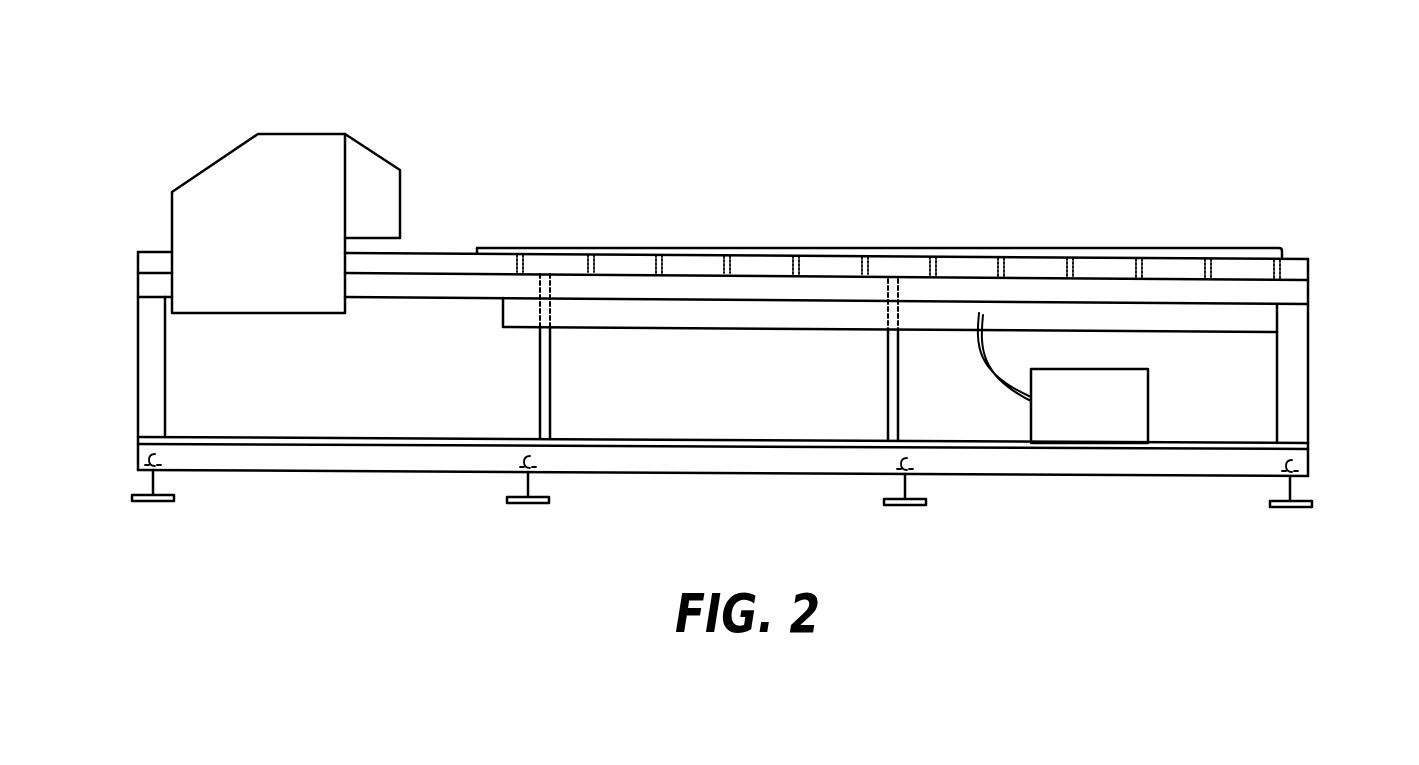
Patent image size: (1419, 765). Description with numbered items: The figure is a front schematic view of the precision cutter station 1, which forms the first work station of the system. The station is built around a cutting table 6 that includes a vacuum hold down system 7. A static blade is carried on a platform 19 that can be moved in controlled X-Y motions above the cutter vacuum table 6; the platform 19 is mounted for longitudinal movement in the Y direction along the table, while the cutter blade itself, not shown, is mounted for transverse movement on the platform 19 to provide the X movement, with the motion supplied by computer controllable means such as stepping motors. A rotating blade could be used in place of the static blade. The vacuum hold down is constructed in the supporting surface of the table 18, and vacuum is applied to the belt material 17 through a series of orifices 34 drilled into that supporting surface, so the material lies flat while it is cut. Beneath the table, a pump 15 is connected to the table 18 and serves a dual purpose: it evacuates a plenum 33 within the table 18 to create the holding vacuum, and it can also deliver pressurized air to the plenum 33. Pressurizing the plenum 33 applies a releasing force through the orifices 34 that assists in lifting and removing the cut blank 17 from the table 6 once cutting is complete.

The precision cutter station 1 is at (832, 112).
The cutting table 6 is at (1324, 356).
The vacuum hold down system 7 is at (1324, 282).
The pump 15 is at (1120, 428).
The belt material 17 is at (1023, 248).
The table 18 is at (707, 268).
The platform 19 is at (302, 146).
The plenum 33 is at (1212, 313).
The orifices 34 is at (659, 262).